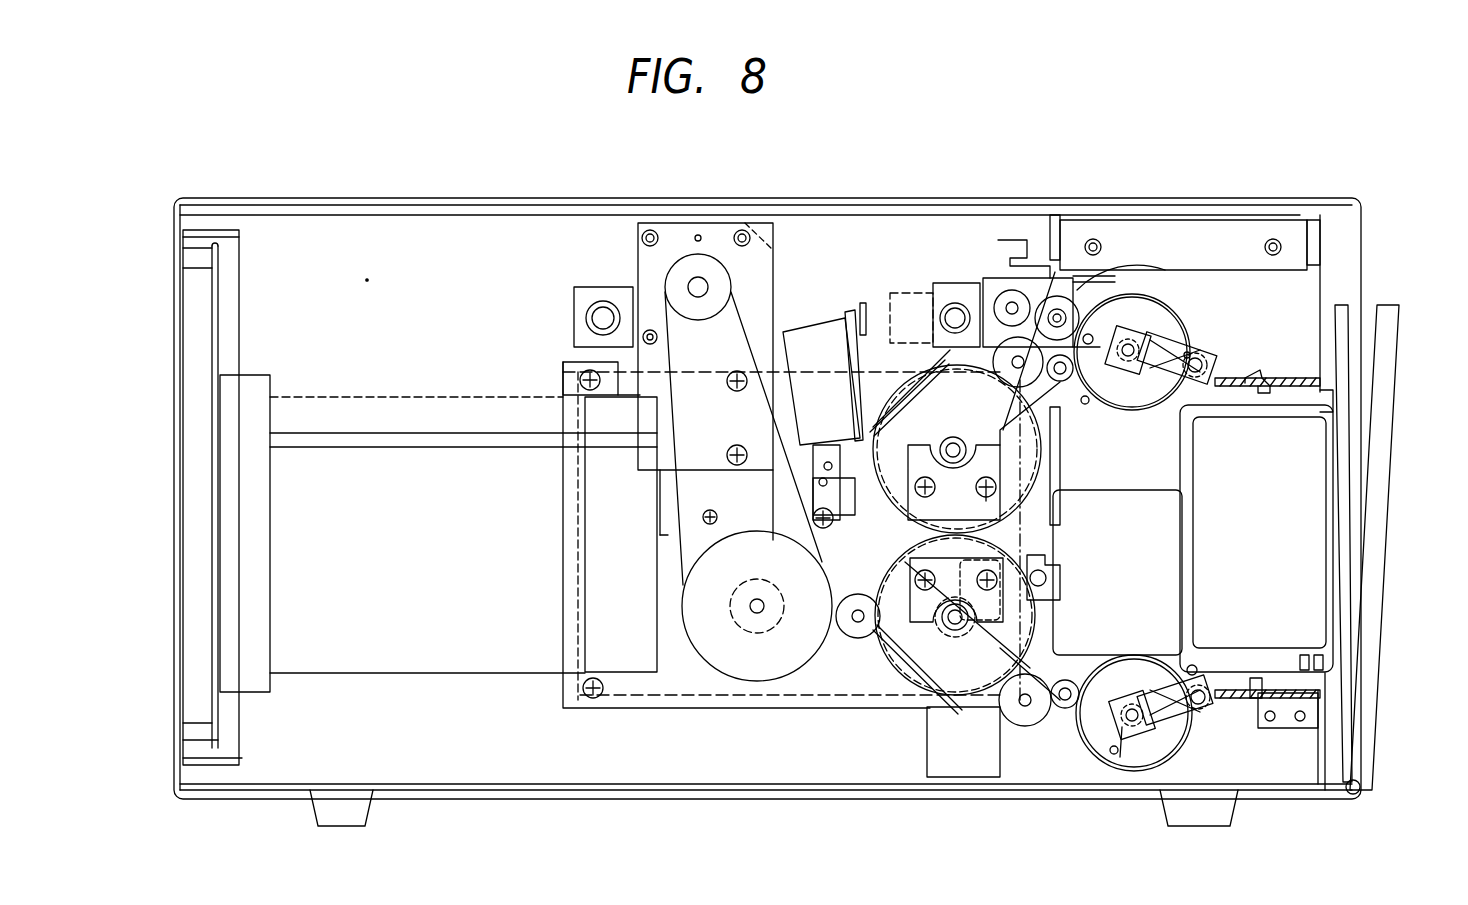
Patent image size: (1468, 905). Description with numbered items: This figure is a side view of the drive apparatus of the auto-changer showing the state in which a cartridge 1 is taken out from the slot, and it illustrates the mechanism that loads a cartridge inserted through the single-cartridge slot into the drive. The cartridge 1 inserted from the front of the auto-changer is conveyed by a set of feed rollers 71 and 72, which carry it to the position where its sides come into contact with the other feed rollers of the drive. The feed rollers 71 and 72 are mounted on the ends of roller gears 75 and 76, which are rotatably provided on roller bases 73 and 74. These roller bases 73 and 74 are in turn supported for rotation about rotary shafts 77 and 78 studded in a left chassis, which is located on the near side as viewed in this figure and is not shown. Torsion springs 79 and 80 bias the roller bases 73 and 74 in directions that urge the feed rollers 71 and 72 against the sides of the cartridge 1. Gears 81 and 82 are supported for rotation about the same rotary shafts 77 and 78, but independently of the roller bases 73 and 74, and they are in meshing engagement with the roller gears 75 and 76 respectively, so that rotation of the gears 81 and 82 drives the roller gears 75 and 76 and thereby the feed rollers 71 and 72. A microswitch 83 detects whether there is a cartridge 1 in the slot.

The cartridge 1 is at (1310, 558).
The feed roller 71 is at (1215, 706).
The feed roller 72 is at (1240, 350).
The roller base 73 is at (1170, 712).
The roller base 74 is at (1200, 350).
The roller gear 75 is at (1200, 722).
The roller gear 76 is at (1222, 358).
The rotary shaft 77 is at (1123, 730).
The rotary shaft 78 is at (1128, 345).
The torsion spring 79 is at (1142, 712).
The torsion spring 80 is at (1172, 352).
The gear 81 is at (1087, 733).
The gear 82 is at (1103, 312).
The microswitch 83 is at (1288, 718).